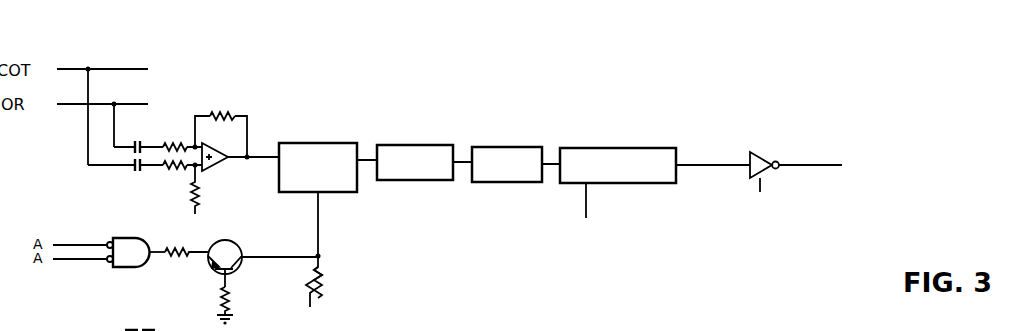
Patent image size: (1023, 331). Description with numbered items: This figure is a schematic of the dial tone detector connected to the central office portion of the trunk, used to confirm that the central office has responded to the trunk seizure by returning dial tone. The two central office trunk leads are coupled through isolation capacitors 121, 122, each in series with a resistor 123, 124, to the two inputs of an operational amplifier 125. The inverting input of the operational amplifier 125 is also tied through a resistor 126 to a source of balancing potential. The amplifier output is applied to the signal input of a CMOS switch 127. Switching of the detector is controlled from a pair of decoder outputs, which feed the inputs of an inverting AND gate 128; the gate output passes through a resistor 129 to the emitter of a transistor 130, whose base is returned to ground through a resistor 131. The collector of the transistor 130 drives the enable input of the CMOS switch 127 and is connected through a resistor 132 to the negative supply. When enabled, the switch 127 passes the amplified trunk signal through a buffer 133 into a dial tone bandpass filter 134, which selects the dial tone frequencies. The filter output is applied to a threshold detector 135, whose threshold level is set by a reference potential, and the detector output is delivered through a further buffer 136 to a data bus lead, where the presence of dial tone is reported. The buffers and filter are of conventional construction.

The isolation capacitor 121 is at (136, 141).
The isolation capacitor 122 is at (137, 171).
The resistor 123 is at (168, 143).
The resistor 124 is at (168, 171).
The operational amplifier 125 is at (215, 166).
The resistor 126 is at (198, 186).
The CMOS switch 127 is at (350, 143).
The inverting AND gate 128 is at (134, 237).
The resistor 129 is at (168, 251).
The transistor 130 is at (239, 247).
The resistor 131 is at (230, 292).
The resistor 132 is at (322, 278).
The buffer 133 is at (440, 145).
The dial tone bandpass filter 134 is at (530, 130).
The threshold detector 135 is at (655, 148).
The buffer 136 is at (766, 153).